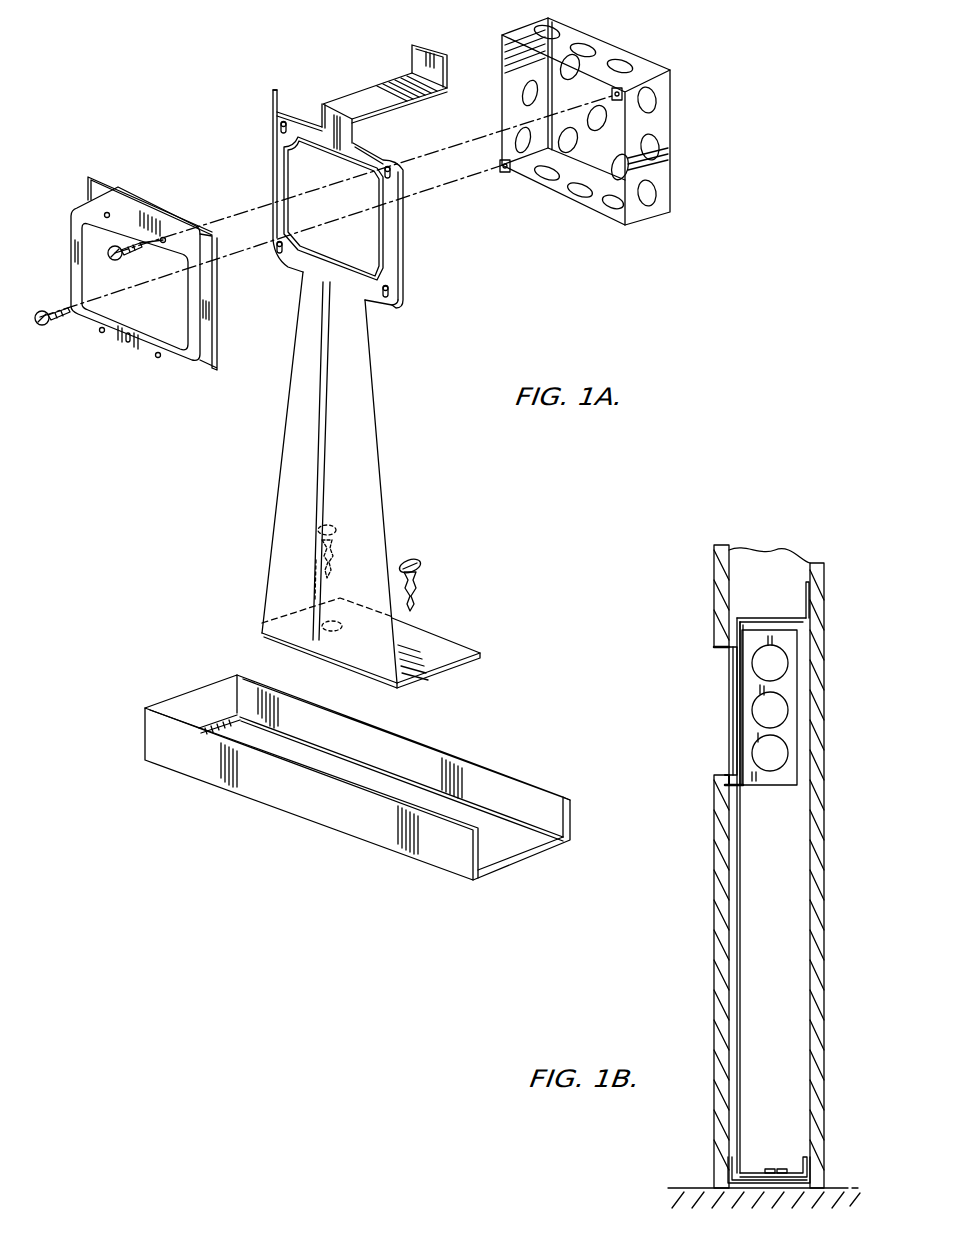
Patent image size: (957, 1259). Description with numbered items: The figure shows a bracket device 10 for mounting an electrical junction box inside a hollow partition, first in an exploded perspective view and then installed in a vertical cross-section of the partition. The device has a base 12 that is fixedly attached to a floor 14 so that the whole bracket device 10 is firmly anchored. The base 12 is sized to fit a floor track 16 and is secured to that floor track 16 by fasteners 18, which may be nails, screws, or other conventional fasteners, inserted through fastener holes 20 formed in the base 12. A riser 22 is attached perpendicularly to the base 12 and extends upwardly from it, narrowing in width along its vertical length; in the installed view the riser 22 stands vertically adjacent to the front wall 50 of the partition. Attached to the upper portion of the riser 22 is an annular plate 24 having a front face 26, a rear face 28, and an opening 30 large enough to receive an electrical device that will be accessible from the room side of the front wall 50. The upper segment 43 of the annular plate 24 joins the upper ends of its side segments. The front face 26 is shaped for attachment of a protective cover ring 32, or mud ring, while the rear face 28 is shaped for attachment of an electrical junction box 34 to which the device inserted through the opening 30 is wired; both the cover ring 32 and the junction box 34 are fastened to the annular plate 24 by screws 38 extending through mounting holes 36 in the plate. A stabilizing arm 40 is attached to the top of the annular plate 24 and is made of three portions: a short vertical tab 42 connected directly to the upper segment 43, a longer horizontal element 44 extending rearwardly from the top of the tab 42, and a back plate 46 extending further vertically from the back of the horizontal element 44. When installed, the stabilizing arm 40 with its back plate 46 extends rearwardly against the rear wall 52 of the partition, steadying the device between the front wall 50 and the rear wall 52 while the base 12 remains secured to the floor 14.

In FIG. 1A, the bracket device 10 is at (388, 438).
In FIG. 1B, the bracket device 10 is at (742, 603).
In FIG. 1A, the base 12 is at (453, 648).
In FIG. 1B, the base 12 is at (797, 1173).
In FIG. 1B, the floor 14 is at (682, 1187).
In FIG. 1A, the floor track 16 is at (548, 808).
In FIG. 1B, the floor track 16 is at (728, 1167).
In FIG. 1A, the fasteners 18 is at (402, 562).
In FIG. 1B, the fasteners 18 is at (772, 1168).
In FIG. 1A, the fastener holes 20 is at (393, 644).
In FIG. 1A, the riser 22 is at (380, 473).
In FIG. 1B, the riser 22 is at (740, 997).
In FIG. 1A, the annular plate 24 is at (405, 230).
In FIG. 1B, the annular plate 24 is at (740, 727).
In FIG. 1A, the front face 26 is at (399, 292).
In FIG. 1A, the rear face 28 is at (405, 262).
In FIG. 1A, the opening 30 is at (287, 178).
In FIG. 1A, the cover ring 32 is at (142, 364).
In FIG. 1B, the cover ring 32 is at (730, 677).
In FIG. 1A, the electrical junction box 34 is at (665, 102).
In FIG. 1B, the electrical junction box 34 is at (788, 733).
In FIG. 1A, the mounting holes 36 is at (280, 127).
In FIG. 1A, the screws 38 is at (111, 257).
In FIG. 1A, the stabilizing arm 40 is at (357, 92).
In FIG. 1B, the stabilizing arm 40 is at (780, 614).
In FIG. 1A, the vertical tab 42 is at (322, 127).
In FIG. 1A, the upper segment 43 is at (275, 106).
In FIG. 1A, the horizontal element 44 is at (392, 86).
In FIG. 1A, the back plate 46 is at (421, 37).
In FIG. 1B, the back plate 46 is at (810, 598).
In FIG. 1B, the front wall 50 is at (722, 852).
In FIG. 1B, the rear wall 52 is at (810, 832).